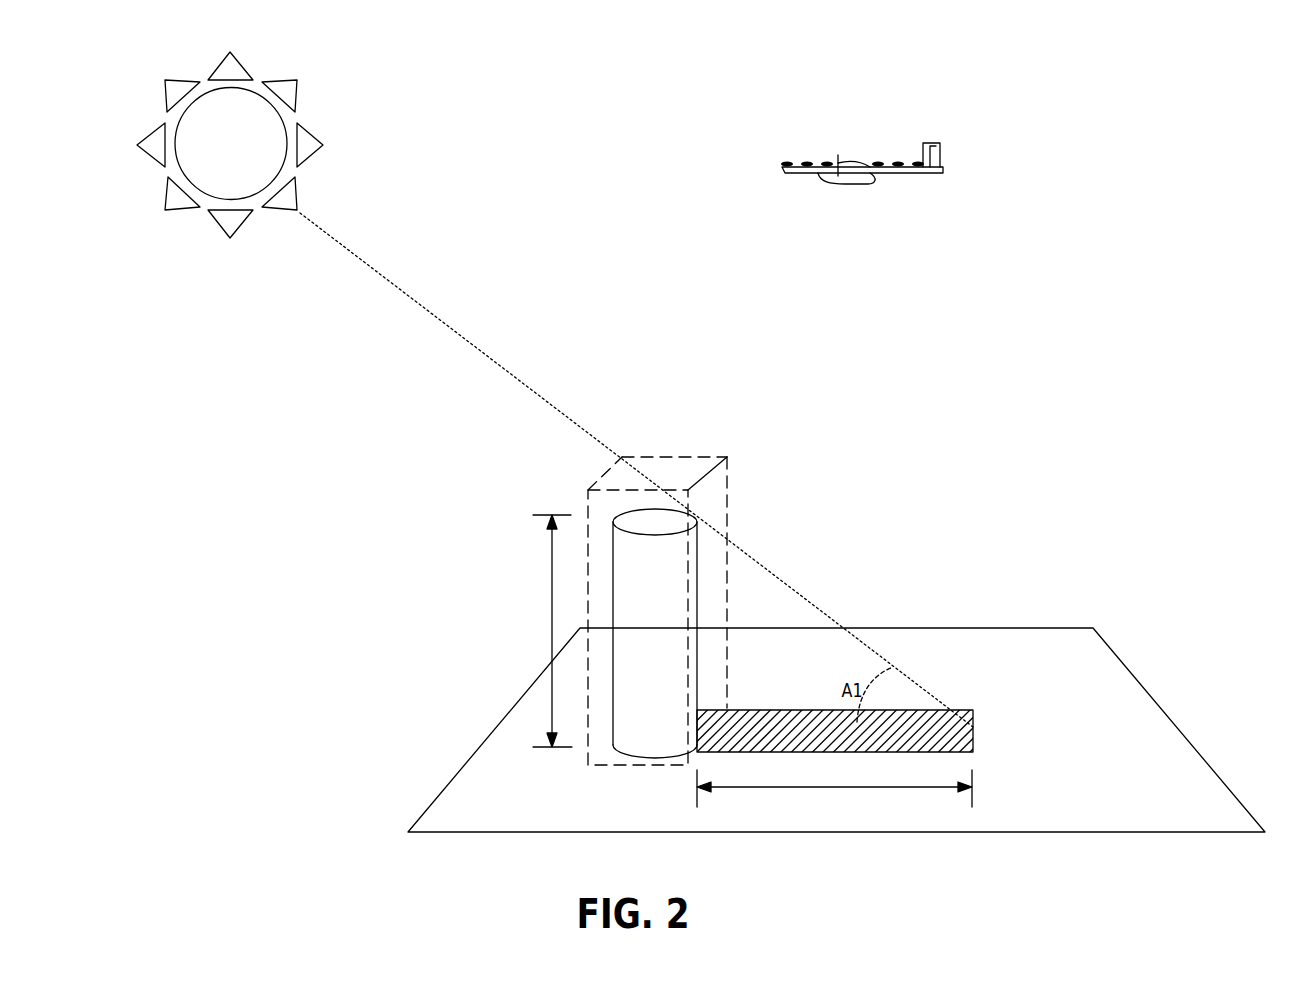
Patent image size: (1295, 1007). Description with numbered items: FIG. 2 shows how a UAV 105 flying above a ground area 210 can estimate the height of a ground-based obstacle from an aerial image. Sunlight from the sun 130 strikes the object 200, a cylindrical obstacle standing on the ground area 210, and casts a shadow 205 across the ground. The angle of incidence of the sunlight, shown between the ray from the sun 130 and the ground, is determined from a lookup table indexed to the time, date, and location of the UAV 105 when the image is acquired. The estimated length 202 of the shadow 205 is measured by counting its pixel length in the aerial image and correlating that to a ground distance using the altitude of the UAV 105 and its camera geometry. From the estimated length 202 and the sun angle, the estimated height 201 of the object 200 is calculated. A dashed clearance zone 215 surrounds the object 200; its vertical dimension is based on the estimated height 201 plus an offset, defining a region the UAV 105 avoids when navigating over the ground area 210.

The sun 130 is at (248, 166).
The UAV 105 is at (815, 118).
The obstacle/object 200 is at (635, 646).
The estimated height 201 is at (550, 613).
The estimated length 202 is at (847, 787).
The shadow 205 is at (780, 727).
The ground area 210 is at (1158, 806).
The clearance zone 215 is at (697, 457).